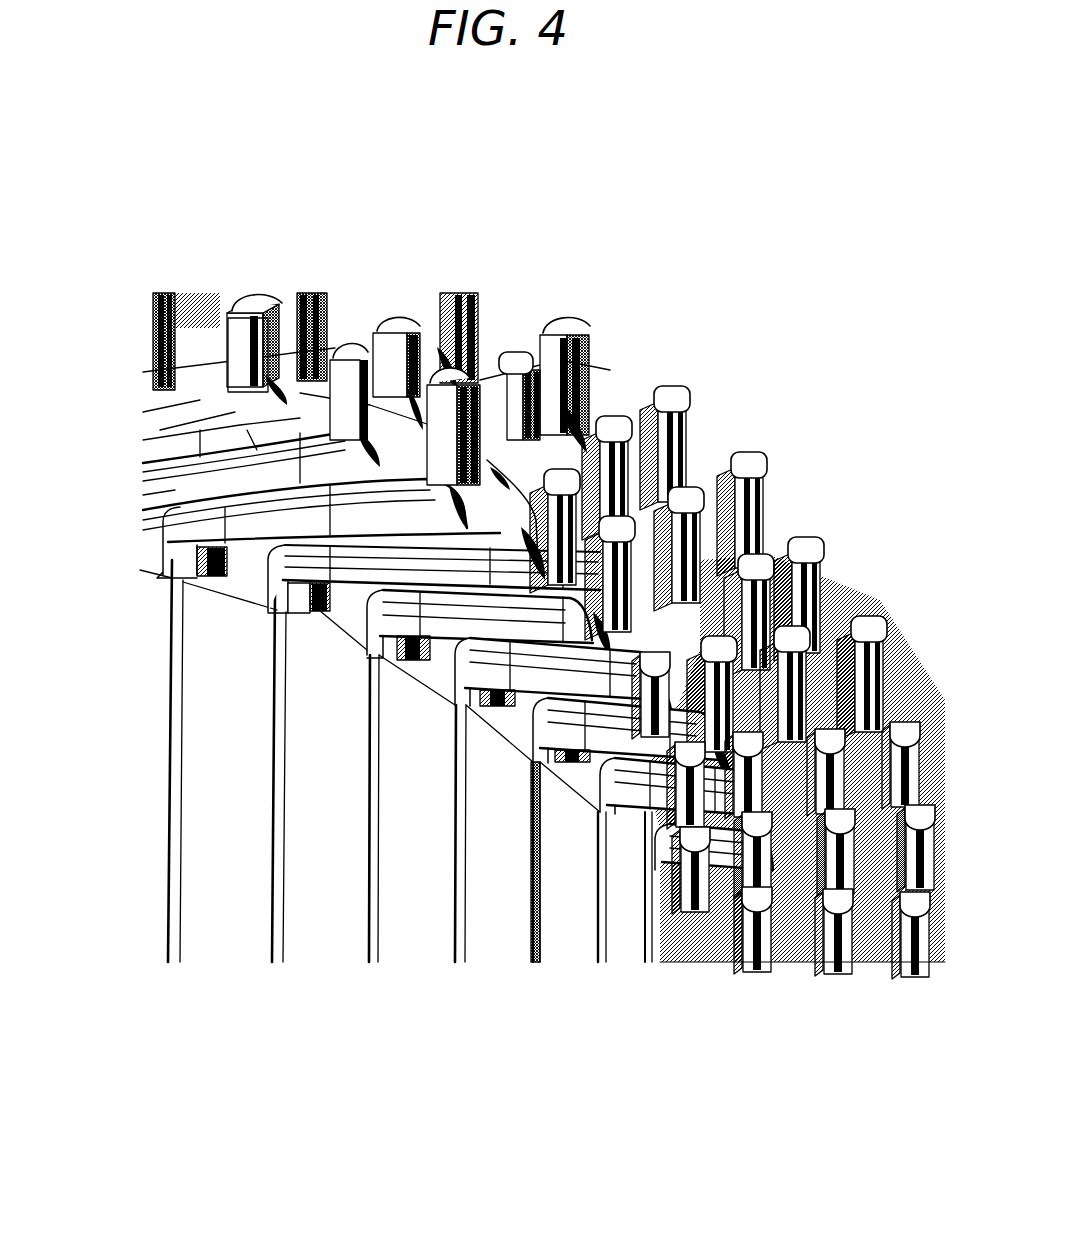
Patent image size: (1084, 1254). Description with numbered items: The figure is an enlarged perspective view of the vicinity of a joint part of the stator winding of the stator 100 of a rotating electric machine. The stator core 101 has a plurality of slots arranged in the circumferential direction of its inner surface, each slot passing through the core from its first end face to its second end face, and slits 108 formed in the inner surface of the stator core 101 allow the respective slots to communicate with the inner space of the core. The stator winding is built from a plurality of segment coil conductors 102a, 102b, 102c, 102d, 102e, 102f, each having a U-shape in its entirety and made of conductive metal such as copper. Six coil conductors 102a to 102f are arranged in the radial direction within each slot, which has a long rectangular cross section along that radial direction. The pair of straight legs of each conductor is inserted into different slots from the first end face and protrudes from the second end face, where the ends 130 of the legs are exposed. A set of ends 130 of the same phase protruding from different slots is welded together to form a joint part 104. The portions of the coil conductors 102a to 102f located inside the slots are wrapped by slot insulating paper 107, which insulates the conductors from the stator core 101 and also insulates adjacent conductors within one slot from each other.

The stator 100 is at (781, 240).
The stator core 101 is at (953, 717).
The coil conductor 102a is at (590, 330).
The coil conductor 102b is at (506, 300).
The coil conductor 102c is at (525, 402).
The coil conductor 102d is at (455, 300).
The coil conductor 102e is at (548, 422).
The coil conductor 102f is at (317, 298).
The joint part 104 is at (818, 542).
The slot insulating paper 107 is at (282, 593).
The slit 108 is at (530, 908).
The ends of straight legs 130 is at (236, 368).